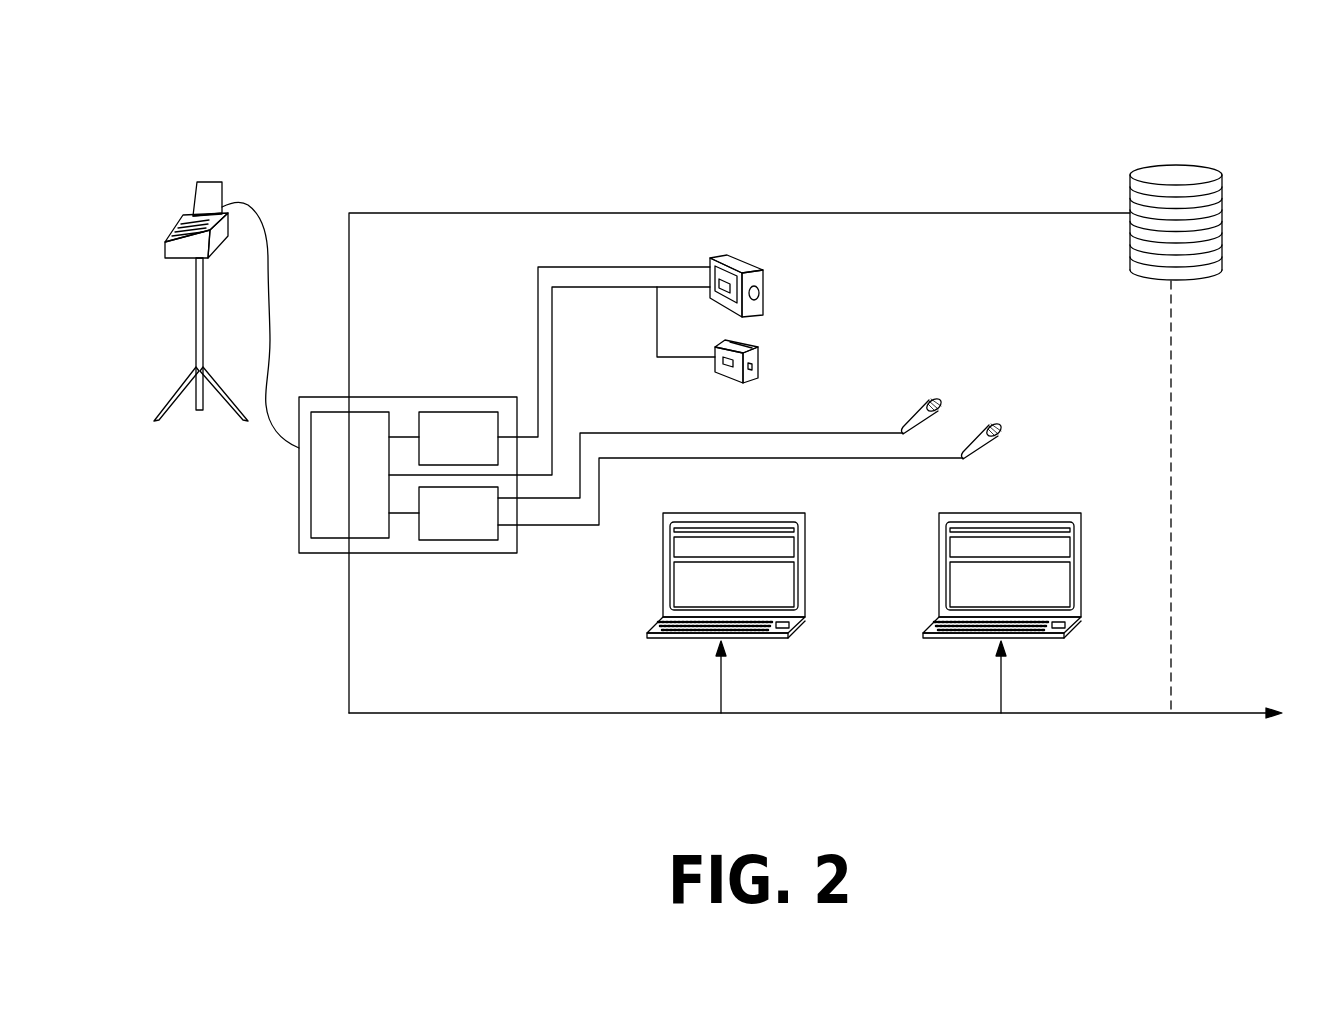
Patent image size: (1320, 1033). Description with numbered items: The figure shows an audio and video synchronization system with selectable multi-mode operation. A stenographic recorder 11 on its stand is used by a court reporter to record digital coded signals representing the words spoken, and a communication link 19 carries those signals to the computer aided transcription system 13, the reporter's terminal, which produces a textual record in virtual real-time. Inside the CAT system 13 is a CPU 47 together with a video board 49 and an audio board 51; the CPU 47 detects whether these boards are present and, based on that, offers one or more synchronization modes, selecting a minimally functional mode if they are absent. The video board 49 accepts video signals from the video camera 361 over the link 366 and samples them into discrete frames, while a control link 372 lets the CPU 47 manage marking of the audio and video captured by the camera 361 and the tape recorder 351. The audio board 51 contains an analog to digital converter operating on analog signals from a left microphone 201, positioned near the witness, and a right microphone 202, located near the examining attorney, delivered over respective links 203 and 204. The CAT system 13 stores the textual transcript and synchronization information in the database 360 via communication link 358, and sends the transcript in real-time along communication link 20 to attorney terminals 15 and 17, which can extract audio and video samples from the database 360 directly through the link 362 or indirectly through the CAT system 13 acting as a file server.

The stenographic recorder 11 is at (205, 158).
The communication link 19 is at (266, 237).
The computer aided transcription (CAT) system 13 is at (308, 567).
The CPU 47 is at (322, 478).
The video processing board 49 is at (470, 412).
The audio board 51 is at (432, 540).
The communication link 358 is at (547, 212).
The communication link 20 is at (1093, 712).
The link 366 is at (537, 328).
The control link 372 is at (555, 358).
The video camera 361 is at (770, 297).
The tape recorder 351 is at (763, 370).
The link 203 is at (680, 432).
The link 204 is at (830, 462).
The left microphone 201 is at (937, 395).
The right microphone 202 is at (998, 417).
The attorney terminal 15 is at (650, 570).
The attorney terminal 17 is at (929, 570).
The database 360 is at (1175, 105).
The link 362 is at (1177, 440).